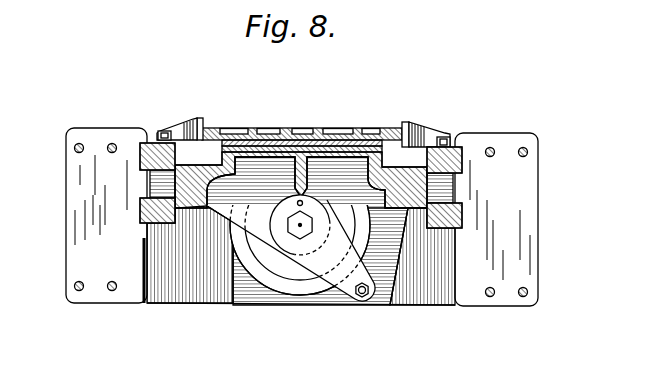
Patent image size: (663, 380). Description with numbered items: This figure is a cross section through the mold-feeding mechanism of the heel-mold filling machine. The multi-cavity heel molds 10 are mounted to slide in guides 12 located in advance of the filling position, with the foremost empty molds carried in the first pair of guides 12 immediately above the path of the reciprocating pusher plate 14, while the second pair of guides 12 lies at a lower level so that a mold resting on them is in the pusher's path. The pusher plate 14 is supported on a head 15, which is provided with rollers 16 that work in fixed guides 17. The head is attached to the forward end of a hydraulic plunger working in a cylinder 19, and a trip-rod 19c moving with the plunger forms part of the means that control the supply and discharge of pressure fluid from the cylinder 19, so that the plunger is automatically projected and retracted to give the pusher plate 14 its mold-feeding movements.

The multi-cavity heel mold 10 is at (352, 131).
The guides 12 is at (197, 123).
The reciprocating pusher plate 14 is at (300, 141).
The head 15 is at (320, 148).
The rollers 16 is at (148, 186).
The fixed guides 17 is at (142, 150).
The cylinder 19 is at (283, 270).
The trip-rod 19c is at (356, 297).